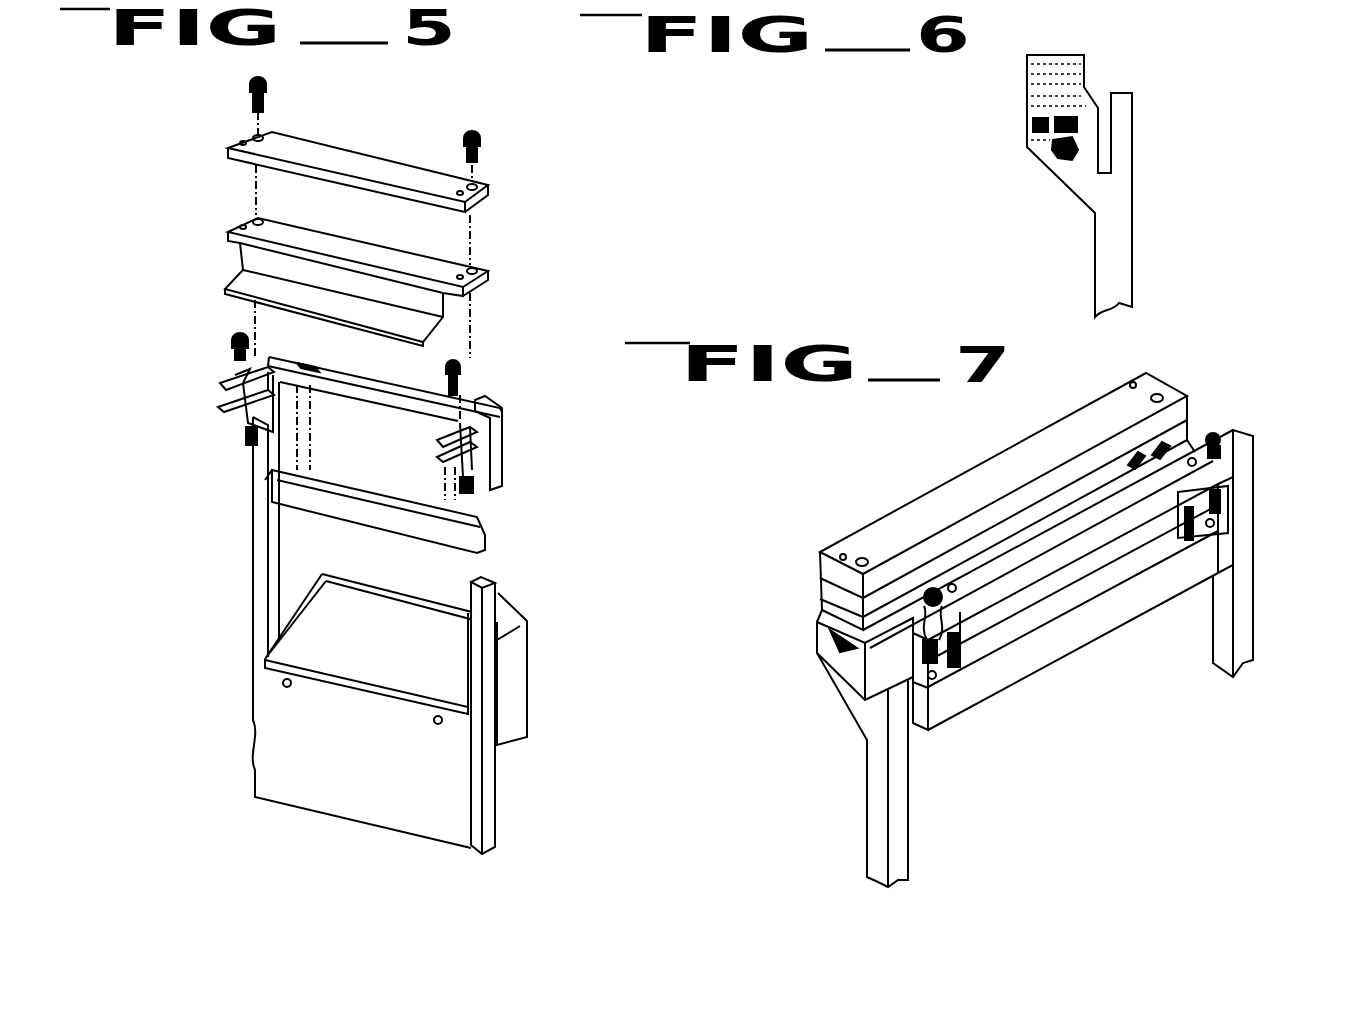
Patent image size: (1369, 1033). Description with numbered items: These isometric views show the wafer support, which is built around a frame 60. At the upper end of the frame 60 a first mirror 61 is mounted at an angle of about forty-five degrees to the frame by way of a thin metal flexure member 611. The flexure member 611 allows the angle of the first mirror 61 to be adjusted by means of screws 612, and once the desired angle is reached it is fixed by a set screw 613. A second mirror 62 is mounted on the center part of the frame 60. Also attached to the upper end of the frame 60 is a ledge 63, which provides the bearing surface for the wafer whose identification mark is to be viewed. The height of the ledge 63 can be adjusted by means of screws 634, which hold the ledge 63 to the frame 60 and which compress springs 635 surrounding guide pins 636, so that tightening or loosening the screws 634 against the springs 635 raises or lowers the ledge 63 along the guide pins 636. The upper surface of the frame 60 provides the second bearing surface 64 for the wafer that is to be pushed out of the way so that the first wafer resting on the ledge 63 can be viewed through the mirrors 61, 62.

In FIG. 5, the frame 60 is at (491, 597).
In FIG. 6, the frame 60 is at (1107, 270).
In FIG. 7, the frame 60 is at (900, 780).
In FIG. 5, the first mirror 61 is at (441, 326).
In FIG. 5, the second mirror 62 is at (386, 660).
In FIG. 5, the ledge 63 is at (300, 510).
In FIG. 7, the ledge 63 is at (893, 658).
In FIG. 7, the second bearing surface 64 is at (1057, 447).
In FIG. 5, the thin metal flexure member 611 is at (493, 443).
In FIG. 6, the thin metal flexure member 611 is at (1087, 125).
In FIG. 5, the screws 612 is at (461, 377).
In FIG. 6, the screws 612 is at (1030, 122).
In FIG. 5, the set screw 613 is at (463, 495).
In FIG. 6, the set screw 613 is at (1068, 162).
In FIG. 7, the screws 634 is at (1213, 435).
In FIG. 7, the springs 635 is at (1180, 545).
In FIG. 7, the guide pins 636 is at (1200, 517).